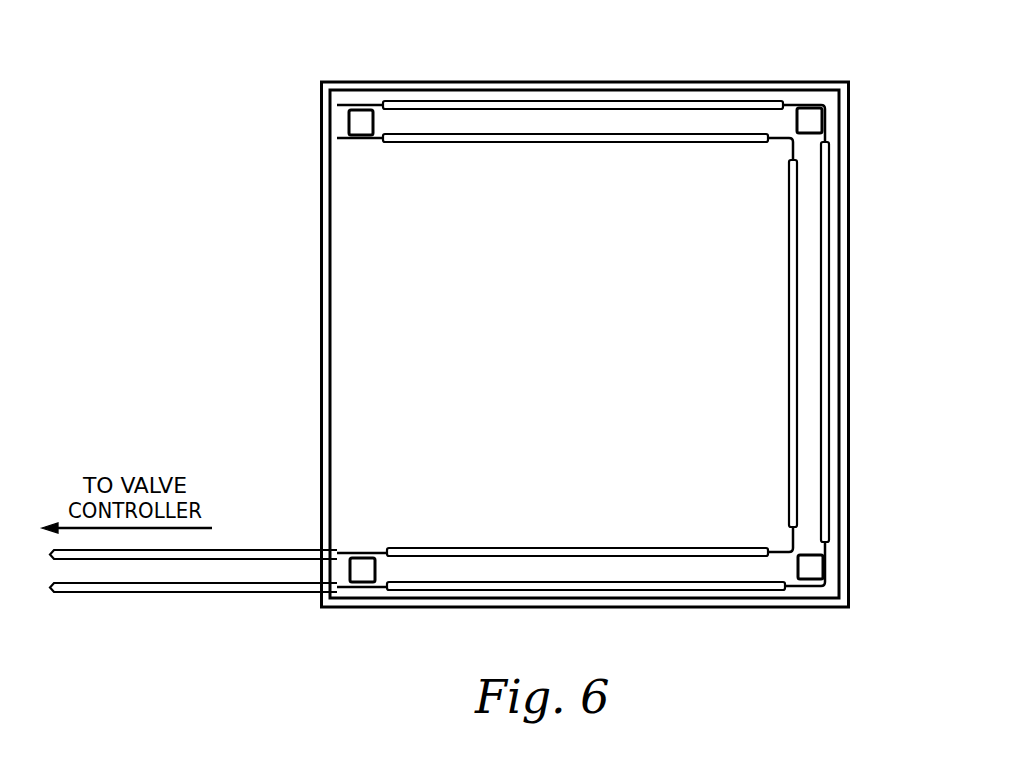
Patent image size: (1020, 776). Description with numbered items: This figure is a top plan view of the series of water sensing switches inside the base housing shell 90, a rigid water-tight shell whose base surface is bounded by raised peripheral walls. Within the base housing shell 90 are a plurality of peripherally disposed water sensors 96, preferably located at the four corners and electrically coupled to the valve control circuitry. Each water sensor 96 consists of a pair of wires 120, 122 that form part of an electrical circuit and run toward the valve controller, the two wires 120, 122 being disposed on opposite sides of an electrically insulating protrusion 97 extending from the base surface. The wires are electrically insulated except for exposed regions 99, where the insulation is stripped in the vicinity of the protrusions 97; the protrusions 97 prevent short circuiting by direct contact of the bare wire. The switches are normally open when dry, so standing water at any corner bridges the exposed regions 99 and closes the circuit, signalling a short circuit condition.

The base housing shell 90 is at (397, 333).
The water sensors 96 is at (380, 152).
The electrically insulating protrusion 97 is at (357, 123).
The exposed regions 99 is at (363, 106).
The wire 120 is at (252, 593).
The wire 122 is at (263, 550).